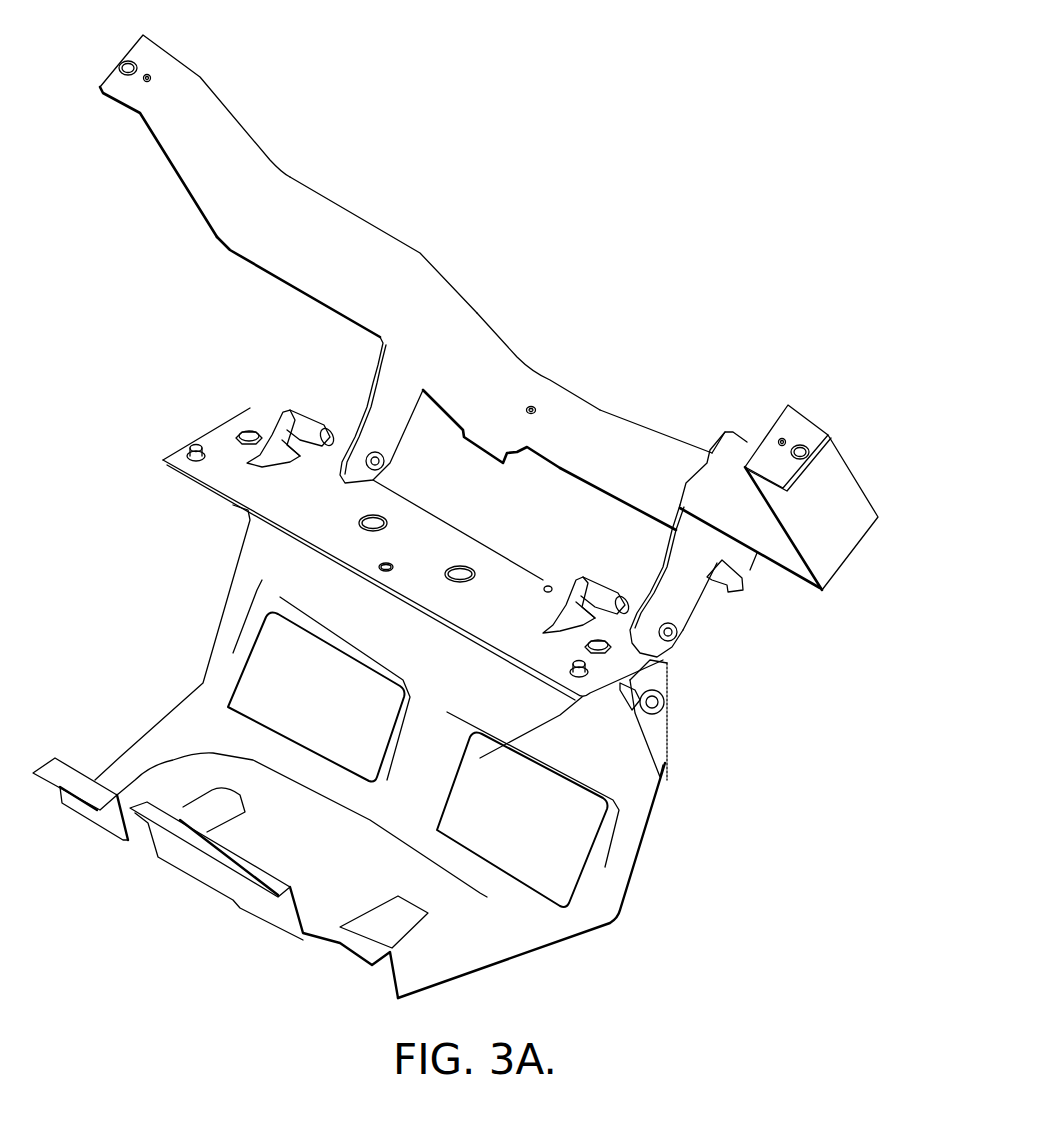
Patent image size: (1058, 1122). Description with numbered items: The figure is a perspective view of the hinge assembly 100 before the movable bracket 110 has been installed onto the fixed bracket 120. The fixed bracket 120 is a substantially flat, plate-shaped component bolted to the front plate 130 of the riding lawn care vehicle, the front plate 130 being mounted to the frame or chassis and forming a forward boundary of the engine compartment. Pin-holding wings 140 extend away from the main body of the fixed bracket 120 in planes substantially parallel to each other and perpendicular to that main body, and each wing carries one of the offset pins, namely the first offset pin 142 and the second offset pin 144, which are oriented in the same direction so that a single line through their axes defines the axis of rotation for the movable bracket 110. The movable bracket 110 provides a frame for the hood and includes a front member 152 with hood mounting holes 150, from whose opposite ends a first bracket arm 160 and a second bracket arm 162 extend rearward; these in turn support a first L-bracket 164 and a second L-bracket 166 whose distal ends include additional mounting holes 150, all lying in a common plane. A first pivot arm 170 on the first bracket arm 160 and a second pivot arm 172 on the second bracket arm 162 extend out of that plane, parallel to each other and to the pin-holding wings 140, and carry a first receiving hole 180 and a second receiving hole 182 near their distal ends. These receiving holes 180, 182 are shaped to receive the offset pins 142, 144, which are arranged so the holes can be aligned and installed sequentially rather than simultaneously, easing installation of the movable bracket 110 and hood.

The hinge assembly 100 is at (740, 51).
The movable bracket 110 is at (363, 242).
The fixed bracket 120 is at (272, 502).
The front plate 130 is at (613, 752).
The pin-holding wings 140 is at (283, 436).
The first offset pin 142 is at (313, 423).
The second offset pin 144 is at (616, 600).
The hood mounting holes 150 is at (138, 67).
The front member 152 is at (607, 413).
The first bracket arm 160 is at (447, 342).
The second bracket arm 162 is at (738, 558).
The first L-bracket 164 is at (253, 167).
The second L-bracket 166 is at (835, 518).
The first pivot arm 170 is at (381, 390).
The second pivot arm 172 is at (683, 563).
The first receiving hole 180 is at (381, 462).
The second receiving hole 182 is at (671, 635).